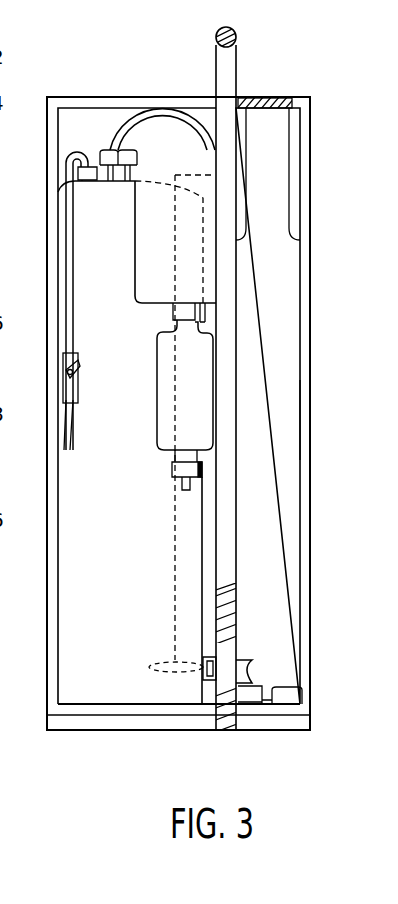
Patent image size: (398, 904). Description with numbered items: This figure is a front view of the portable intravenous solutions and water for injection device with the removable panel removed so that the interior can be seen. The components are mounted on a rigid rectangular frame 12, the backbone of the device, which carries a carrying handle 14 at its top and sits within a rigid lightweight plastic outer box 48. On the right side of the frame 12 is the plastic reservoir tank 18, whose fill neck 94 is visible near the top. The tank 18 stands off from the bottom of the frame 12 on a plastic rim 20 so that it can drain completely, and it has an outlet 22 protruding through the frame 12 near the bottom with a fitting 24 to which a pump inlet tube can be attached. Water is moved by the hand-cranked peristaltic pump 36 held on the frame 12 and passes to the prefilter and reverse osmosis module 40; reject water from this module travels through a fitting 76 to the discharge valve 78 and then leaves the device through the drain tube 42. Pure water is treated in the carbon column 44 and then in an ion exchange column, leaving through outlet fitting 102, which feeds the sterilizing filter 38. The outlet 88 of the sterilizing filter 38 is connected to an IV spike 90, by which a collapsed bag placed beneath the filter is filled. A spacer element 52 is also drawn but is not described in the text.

The frame 12 is at (226, 562).
The carrying handle 14 is at (237, 38).
The plastic reservoir tank 18 is at (283, 420).
The plastic rim 20 is at (302, 687).
The outlet 22 is at (241, 668).
The fitting 24 is at (205, 686).
The peristaltic pump 36 is at (157, 160).
The sterilizing filter 38 is at (165, 348).
The prefilter and reverse osmosis module 40 is at (87, 303).
The drain tube 42 is at (70, 243).
The carbon column 44 is at (211, 288).
The outer box 48 is at (75, 97).
The spacer 52 is at (266, 97).
The fitting 76 is at (101, 150).
The discharge valve 78 is at (64, 386).
The outlet 88 is at (175, 478).
The IV spike 90 is at (182, 490).
The fill neck 94 is at (268, 156).
The outlet fitting 102 is at (123, 181).